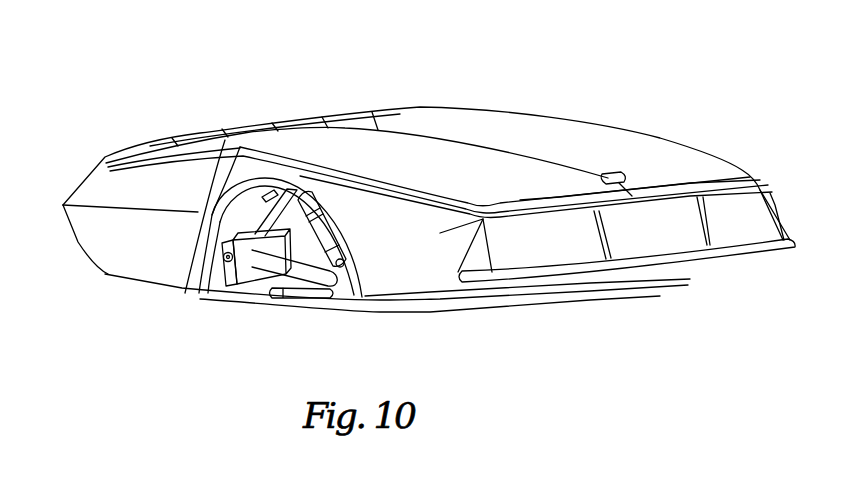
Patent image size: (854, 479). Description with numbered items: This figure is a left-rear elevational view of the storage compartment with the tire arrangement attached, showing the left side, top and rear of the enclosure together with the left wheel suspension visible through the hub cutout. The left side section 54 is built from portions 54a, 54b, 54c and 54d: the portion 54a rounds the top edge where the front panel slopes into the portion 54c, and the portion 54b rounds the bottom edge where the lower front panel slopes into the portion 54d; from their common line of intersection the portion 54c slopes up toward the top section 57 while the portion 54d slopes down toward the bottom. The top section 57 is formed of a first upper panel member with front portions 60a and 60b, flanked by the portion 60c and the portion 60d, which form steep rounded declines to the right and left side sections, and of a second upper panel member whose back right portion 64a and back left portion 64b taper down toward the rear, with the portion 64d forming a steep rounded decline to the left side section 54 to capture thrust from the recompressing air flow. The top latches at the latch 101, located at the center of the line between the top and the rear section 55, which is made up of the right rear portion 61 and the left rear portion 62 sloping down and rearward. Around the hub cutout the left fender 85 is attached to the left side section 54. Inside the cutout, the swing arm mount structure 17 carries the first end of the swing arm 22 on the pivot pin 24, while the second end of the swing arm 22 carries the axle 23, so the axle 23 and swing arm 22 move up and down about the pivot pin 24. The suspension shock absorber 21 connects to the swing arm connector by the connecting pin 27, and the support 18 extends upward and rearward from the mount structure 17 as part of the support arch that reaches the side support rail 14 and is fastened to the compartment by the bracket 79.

The side support rail 14 is at (356, 293).
The swing arm mount structure 17 is at (248, 284).
The support 18 is at (270, 216).
The suspension shock absorber 21 is at (323, 230).
The swing arm 22 is at (280, 268).
The axle 23 is at (305, 299).
The pivot pin 24 is at (224, 259).
The connecting pin 27 is at (344, 259).
The left side section 54 is at (133, 286).
The portion 54a is at (73, 191).
The portion 54b is at (78, 242).
The portion 54c is at (138, 186).
The portion 54d is at (131, 240).
The rear section 55 is at (680, 257).
The top section 57 is at (419, 103).
The front right portion 60a is at (330, 113).
The front left portion 60b is at (173, 140).
The portion 60c is at (397, 113).
The portion 60d is at (230, 140).
The right rear portion 61 is at (691, 225).
The left rear portion 62 is at (544, 241).
The back right portion 64a is at (547, 141).
The back left portion 64b is at (398, 156).
The portion 64d is at (474, 178).
The bracket 79 is at (264, 199).
The left fender 85 is at (360, 268).
The latch 101 is at (620, 175).